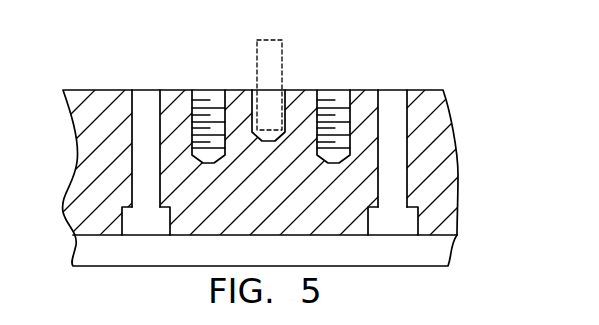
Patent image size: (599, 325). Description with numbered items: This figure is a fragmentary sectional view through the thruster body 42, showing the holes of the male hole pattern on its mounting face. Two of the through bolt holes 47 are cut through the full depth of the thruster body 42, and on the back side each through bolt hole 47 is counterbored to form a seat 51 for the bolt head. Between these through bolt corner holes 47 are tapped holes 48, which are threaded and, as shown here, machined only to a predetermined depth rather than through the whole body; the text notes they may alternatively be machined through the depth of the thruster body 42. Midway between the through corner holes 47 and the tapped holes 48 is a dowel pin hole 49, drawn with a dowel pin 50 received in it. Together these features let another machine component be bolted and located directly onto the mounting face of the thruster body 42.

The thruster body 42 is at (438, 181).
The through bolt holes 47 is at (144, 97).
The tapped holes 48 is at (202, 96).
The dowel pin hole 49 is at (256, 92).
The dowel pin 50 is at (282, 52).
The seat 51 is at (168, 218).